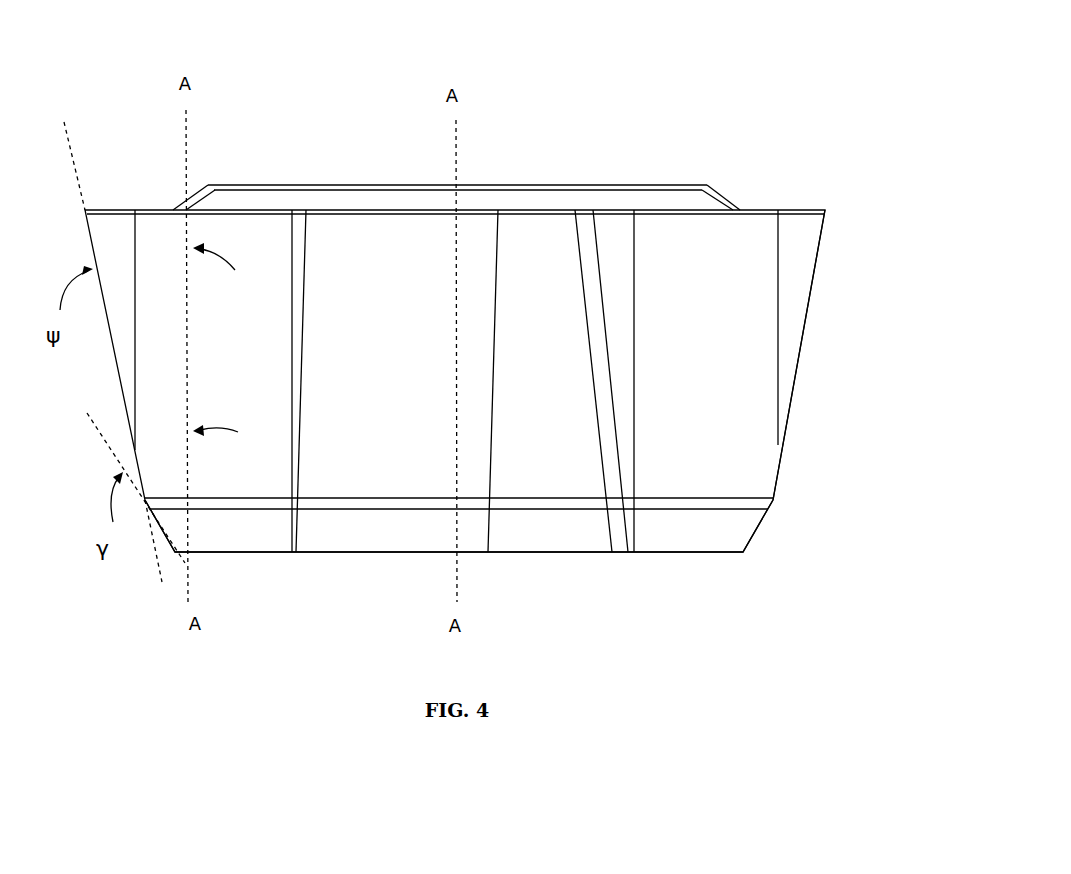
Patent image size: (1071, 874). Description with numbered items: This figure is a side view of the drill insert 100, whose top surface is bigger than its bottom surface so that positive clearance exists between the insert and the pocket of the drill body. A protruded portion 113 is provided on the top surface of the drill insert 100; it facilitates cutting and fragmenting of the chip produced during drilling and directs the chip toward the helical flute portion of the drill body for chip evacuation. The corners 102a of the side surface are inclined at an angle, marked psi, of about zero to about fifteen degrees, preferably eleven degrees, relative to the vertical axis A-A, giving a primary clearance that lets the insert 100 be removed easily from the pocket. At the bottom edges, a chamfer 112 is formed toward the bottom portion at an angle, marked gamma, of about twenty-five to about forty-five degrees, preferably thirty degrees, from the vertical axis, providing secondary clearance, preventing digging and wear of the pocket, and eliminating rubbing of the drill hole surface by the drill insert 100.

The drill insert 100 is at (777, 132).
The corners of the side surface 102a is at (802, 297).
The chamfer 112 is at (760, 520).
The protruded portion 113 is at (243, 203).